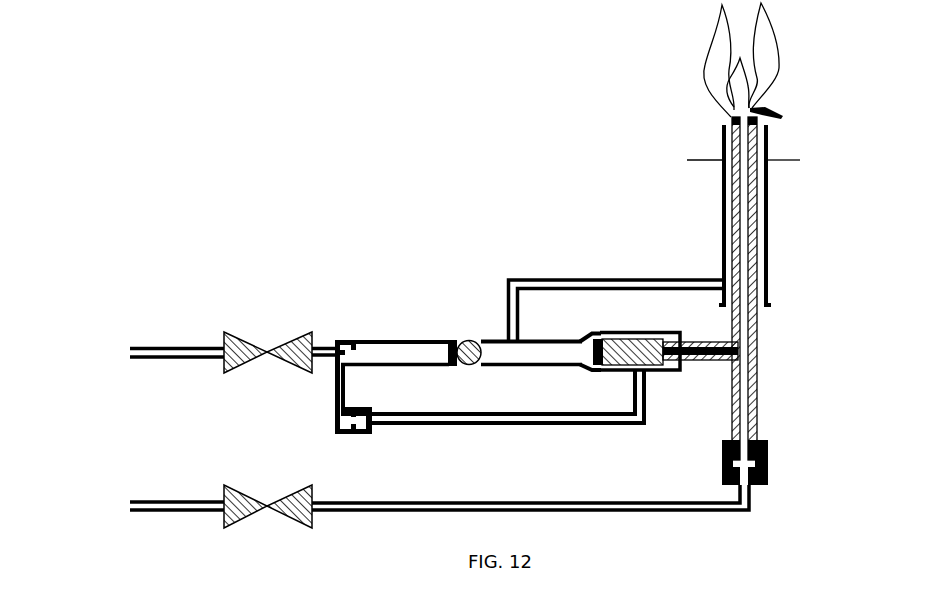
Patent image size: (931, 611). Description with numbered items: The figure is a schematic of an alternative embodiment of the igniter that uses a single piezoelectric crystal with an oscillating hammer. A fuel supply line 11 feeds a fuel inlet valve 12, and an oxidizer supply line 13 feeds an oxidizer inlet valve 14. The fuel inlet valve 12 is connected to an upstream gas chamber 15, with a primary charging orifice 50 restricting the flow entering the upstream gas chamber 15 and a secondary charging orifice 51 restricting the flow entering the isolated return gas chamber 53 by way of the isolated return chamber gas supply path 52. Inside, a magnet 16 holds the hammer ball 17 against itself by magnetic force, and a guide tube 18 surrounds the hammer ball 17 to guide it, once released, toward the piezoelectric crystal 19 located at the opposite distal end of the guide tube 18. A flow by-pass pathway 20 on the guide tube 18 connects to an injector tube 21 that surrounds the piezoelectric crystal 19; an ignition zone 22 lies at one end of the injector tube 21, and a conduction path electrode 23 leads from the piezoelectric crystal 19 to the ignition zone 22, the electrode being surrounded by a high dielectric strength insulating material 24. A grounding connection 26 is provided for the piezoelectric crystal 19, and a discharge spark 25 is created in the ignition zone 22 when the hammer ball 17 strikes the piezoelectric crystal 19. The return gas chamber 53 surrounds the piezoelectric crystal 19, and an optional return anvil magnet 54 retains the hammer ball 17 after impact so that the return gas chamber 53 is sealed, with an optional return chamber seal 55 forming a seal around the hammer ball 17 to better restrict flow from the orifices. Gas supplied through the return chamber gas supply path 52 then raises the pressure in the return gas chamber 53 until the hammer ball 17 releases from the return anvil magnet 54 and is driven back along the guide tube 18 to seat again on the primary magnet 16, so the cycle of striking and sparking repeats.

The fuel supply line 11 is at (196, 358).
The fuel inlet valve 12 is at (277, 340).
The oxidizer supply line 13 is at (207, 500).
The oxidizer inlet valve 14 is at (277, 493).
The upstream gas chamber 15 is at (428, 348).
The magnet 16 is at (448, 366).
The hammer ball 17 is at (467, 366).
The guide tube 18 is at (525, 366).
The piezoelectric crystal 19 is at (633, 364).
The flow by-pass pathway 20 is at (552, 278).
The injector tube 21 is at (722, 203).
The ignition zone 22 is at (732, 117).
The conduction path electrode 23 is at (710, 362).
The high dielectric strength insulating material 24 is at (768, 306).
The discharge spark 25 is at (750, 107).
The grounding connection for the piezoelectric crystal 26 is at (600, 336).
The primary charging orifice 50 is at (353, 338).
The secondary charging orifice 51 is at (345, 433).
The isolated return chamber gas supply path 52 is at (545, 425).
The isolated return gas chamber 53 is at (658, 372).
The return anvil magnet 54 is at (597, 370).
The return chamber seal 55 is at (578, 337).